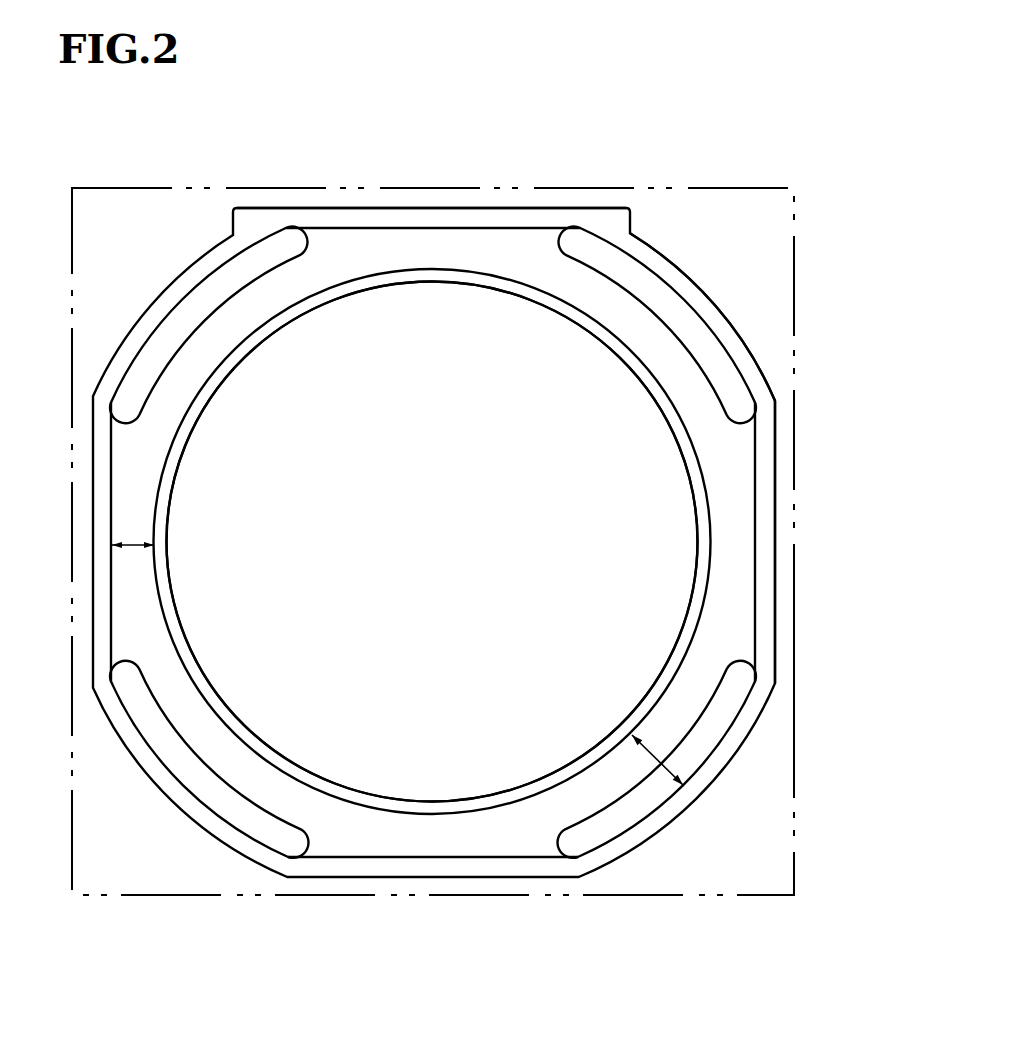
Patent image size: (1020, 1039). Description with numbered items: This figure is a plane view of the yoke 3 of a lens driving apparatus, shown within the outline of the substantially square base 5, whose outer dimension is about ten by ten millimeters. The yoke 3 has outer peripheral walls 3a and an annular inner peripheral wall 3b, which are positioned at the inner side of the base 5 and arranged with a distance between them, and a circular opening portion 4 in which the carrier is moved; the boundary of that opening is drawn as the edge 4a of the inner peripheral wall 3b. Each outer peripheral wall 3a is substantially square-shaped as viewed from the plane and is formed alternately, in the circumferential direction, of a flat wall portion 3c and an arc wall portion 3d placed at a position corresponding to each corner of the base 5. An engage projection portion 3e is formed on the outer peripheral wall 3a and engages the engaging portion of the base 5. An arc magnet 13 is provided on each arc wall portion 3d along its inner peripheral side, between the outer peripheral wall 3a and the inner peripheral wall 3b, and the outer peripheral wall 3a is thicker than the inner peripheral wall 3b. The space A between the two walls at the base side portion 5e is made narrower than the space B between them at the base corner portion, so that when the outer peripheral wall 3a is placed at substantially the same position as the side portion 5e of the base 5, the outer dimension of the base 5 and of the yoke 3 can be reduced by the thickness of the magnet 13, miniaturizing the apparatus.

The yoke 3 is at (681, 243).
The outer peripheral wall 3a is at (764, 548).
The inner peripheral wall 3b is at (698, 550).
The flat wall portion 3c is at (764, 465).
The arc wall portion 3d is at (706, 305).
The engage projection portion 3e is at (426, 214).
The opening portion 4 is at (465, 772).
The lens edge 4a is at (253, 350).
The base 5 is at (796, 348).
The side portion 5e is at (796, 670).
The magnet 13 is at (722, 733).
The space A is at (133, 540).
The space B is at (650, 752).